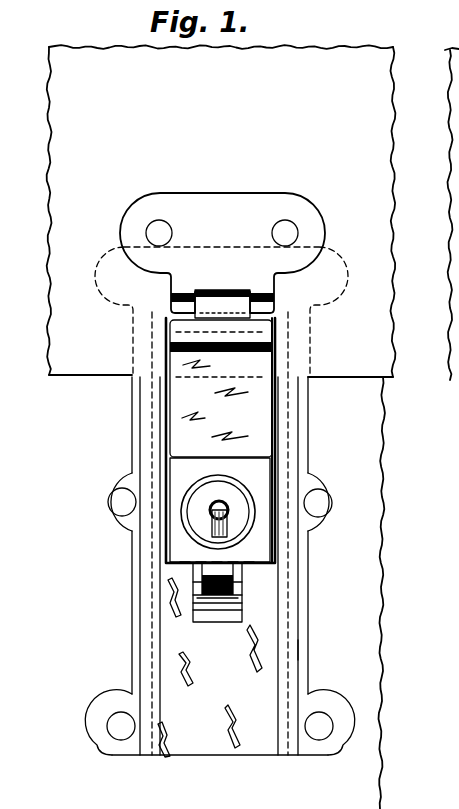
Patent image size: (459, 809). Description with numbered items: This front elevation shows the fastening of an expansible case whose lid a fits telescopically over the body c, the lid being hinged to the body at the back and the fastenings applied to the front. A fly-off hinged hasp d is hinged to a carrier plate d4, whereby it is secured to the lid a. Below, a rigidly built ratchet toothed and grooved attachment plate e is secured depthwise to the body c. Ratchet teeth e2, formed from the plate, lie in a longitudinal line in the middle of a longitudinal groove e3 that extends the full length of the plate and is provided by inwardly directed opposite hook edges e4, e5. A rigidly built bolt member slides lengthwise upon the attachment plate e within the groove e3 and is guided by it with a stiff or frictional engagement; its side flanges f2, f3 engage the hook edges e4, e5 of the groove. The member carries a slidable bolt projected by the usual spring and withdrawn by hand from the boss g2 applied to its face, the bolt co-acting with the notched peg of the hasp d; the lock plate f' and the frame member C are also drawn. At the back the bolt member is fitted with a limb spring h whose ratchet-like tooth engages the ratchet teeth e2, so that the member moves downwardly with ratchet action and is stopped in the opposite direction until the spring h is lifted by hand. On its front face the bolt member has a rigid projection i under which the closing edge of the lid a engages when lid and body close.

The lid a is at (221, 211).
The body c is at (368, 607).
The frame member C is at (358, 642).
The attachment plate e is at (313, 612).
The ratchet teeth e2 is at (210, 605).
The longitudinal groove e3 is at (210, 667).
The hook edge e4 is at (155, 673).
The hook edge e5 is at (290, 683).
The hasp d is at (245, 370).
The carrier plate d4 is at (222, 253).
The rigid projection i is at (168, 343).
The lock plate f' is at (220, 510).
The side flange f2 is at (166, 533).
The side flange f3 is at (277, 543).
The boss g2 is at (253, 492).
The limb spring h is at (215, 572).